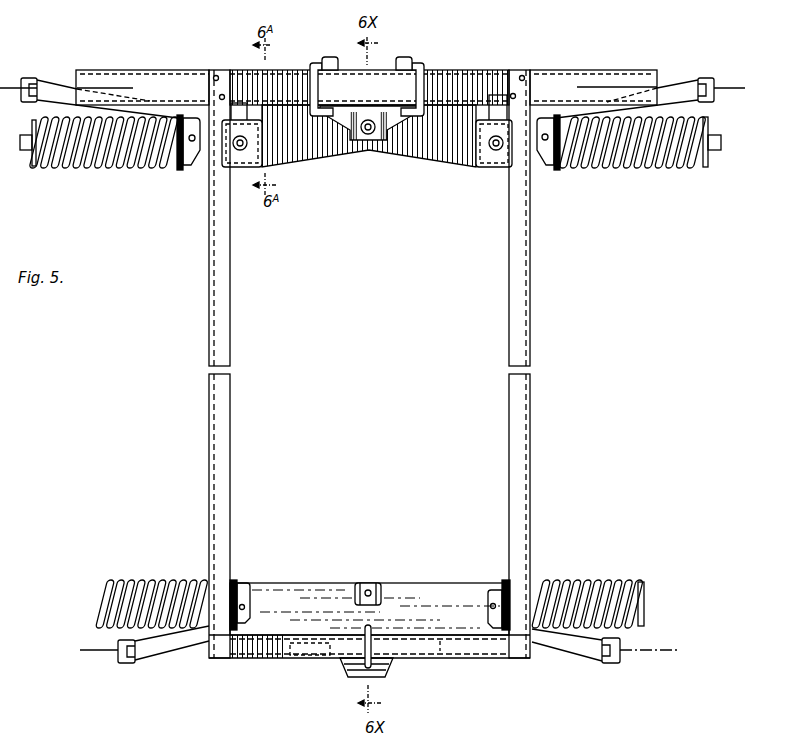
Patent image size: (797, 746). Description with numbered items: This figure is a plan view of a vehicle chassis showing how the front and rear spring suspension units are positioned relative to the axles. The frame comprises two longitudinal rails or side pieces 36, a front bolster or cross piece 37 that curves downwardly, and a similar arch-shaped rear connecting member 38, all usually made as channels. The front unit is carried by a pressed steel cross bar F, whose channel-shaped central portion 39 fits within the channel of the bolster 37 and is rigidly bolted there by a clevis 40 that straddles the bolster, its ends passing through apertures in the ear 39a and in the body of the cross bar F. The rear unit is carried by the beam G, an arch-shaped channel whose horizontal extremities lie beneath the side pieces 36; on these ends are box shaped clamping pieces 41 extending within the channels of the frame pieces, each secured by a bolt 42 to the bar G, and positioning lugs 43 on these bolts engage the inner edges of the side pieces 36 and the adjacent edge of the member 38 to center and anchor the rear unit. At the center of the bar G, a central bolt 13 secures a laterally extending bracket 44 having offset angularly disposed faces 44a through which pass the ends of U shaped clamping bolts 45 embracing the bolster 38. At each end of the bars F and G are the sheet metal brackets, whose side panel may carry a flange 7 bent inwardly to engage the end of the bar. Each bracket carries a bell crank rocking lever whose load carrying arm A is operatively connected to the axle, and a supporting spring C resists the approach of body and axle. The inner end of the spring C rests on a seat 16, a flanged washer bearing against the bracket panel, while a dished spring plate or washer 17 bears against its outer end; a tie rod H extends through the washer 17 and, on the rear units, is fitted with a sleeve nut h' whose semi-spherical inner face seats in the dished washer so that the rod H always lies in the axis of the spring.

The rails or side pieces 36 is at (511, 258).
The front bolster or cross piece 37 is at (478, 658).
The rear connecting member 38 is at (470, 74).
The central portion 39 is at (327, 657).
The ear 39a is at (388, 665).
The clevis 40 is at (370, 628).
The box shaped clamping pieces 41 is at (500, 168).
The bolt 42 is at (490, 150).
The positioning lugs 43 is at (495, 104).
The laterally extending bracket 44 is at (348, 132).
The offset angularly disposed faces 44a is at (403, 54).
The U shaped clamping bolts 45 is at (426, 70).
The central bolt 13 is at (368, 136).
The seat 16 is at (505, 582).
The flange 7 is at (490, 618).
The dished spring plate or washer 17 is at (643, 597).
The load carrying arm A is at (585, 647).
The supporting spring C is at (600, 583).
The beam G is at (433, 153).
The cross bar or beam F is at (317, 590).
The tie rod H is at (717, 143).
The sleeve nuts h' is at (370, 153).